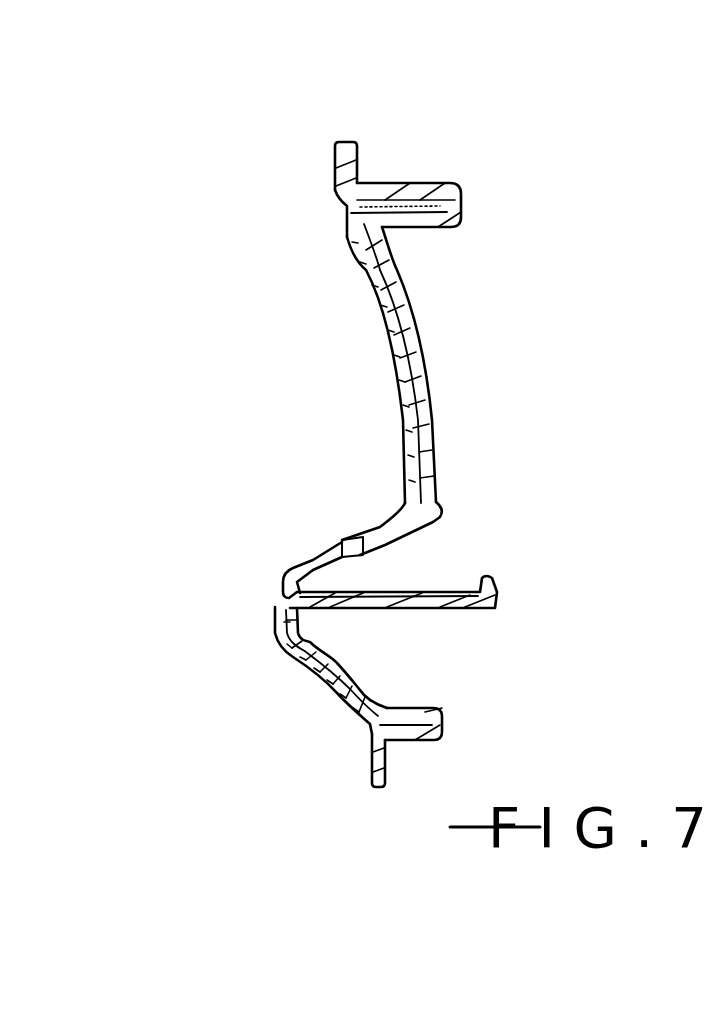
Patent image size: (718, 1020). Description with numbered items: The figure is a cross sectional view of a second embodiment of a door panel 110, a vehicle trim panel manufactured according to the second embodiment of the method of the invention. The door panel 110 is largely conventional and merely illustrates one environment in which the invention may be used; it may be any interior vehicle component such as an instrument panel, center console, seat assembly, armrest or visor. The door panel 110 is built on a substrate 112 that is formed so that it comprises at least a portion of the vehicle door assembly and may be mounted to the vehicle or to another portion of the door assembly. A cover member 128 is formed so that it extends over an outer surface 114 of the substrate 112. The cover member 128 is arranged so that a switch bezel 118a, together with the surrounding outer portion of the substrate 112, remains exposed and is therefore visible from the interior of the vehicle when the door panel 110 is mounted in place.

The door panel 110 is at (335, 451).
The substrate 112 is at (417, 325).
The outer surface 114 is at (413, 385).
The switch bezel 118a is at (307, 567).
The cover member 128 is at (390, 347).